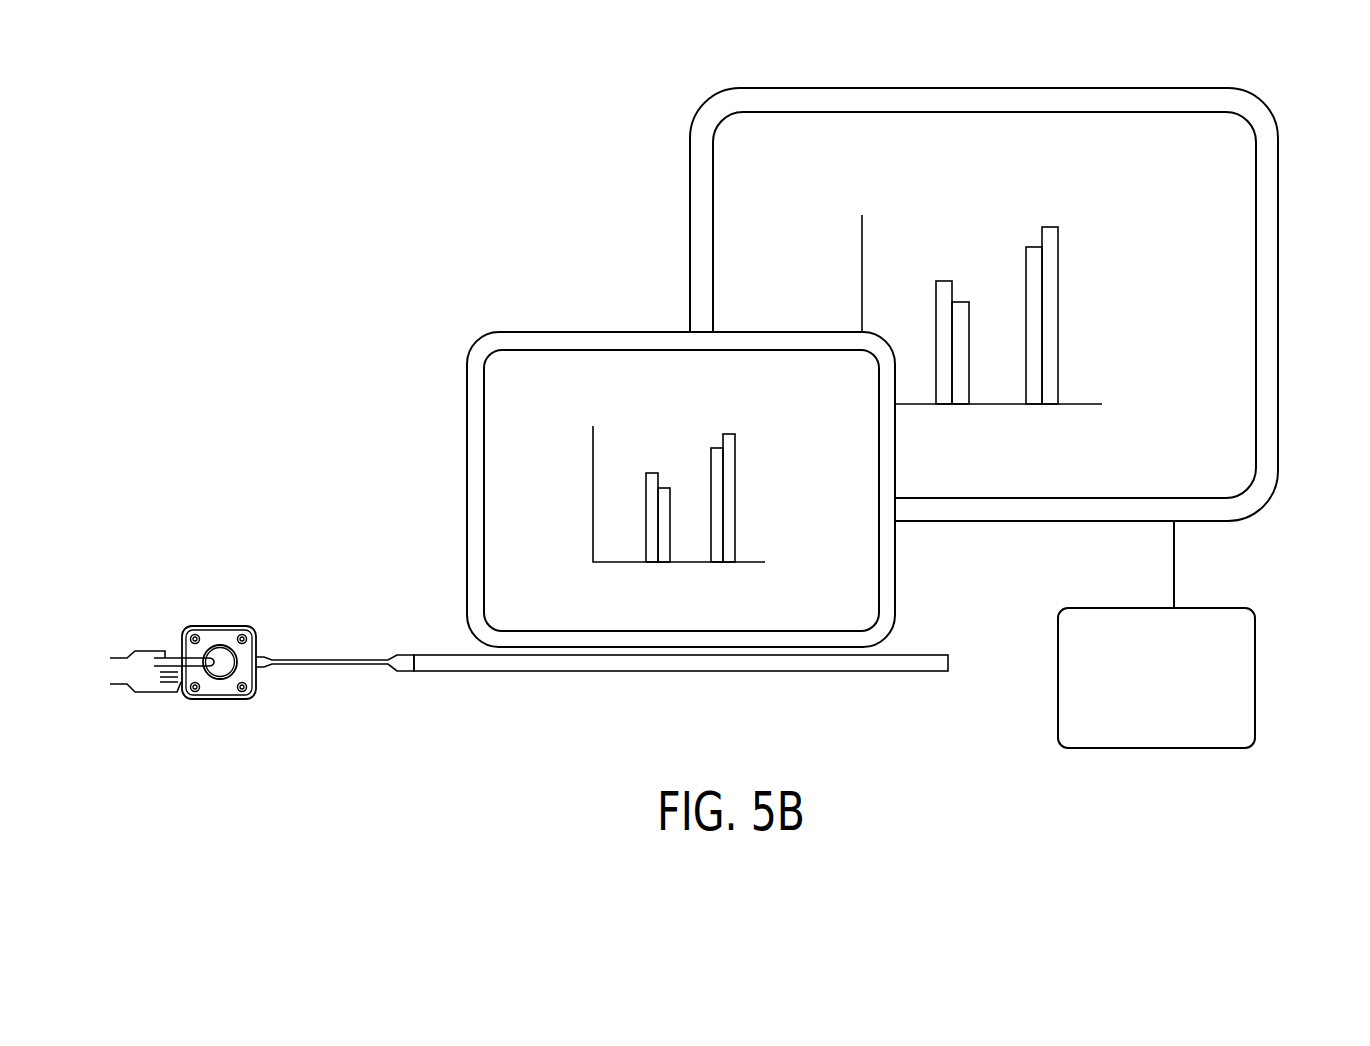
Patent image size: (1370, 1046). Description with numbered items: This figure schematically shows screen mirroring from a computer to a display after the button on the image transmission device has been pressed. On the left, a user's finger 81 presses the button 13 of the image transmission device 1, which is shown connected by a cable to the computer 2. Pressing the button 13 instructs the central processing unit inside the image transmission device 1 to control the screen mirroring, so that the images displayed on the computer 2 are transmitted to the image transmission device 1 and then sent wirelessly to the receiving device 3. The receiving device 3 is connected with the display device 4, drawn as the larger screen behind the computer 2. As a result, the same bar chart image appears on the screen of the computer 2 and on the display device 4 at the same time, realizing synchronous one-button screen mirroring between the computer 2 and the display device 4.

The image transmission device 1 is at (225, 701).
The button 13 is at (218, 658).
The finger 81 is at (193, 629).
The computer 2 is at (580, 331).
The receiving device 3 is at (1155, 749).
The display device 4 is at (1279, 199).